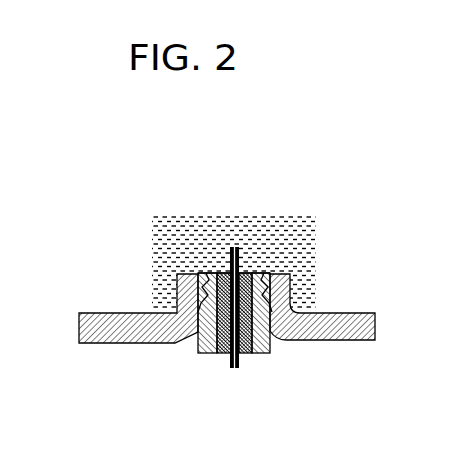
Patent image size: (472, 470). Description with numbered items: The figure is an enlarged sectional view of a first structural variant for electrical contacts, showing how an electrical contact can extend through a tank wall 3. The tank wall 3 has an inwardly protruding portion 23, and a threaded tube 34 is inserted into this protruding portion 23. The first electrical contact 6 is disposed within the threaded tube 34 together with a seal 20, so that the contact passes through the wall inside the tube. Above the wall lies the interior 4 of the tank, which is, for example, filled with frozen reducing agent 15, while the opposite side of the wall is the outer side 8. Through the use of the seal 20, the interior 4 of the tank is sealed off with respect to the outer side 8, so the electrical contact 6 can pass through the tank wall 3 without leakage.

The tank wall 3 is at (356, 341).
The interior 4 is at (240, 184).
The first electrical contact 6 is at (240, 366).
The outer side 8 is at (168, 360).
The frozen reducing agent 15 is at (288, 236).
The seal 20 is at (215, 272).
The inwardly protruding portion 23 is at (192, 293).
The threaded tube 34 is at (272, 353).